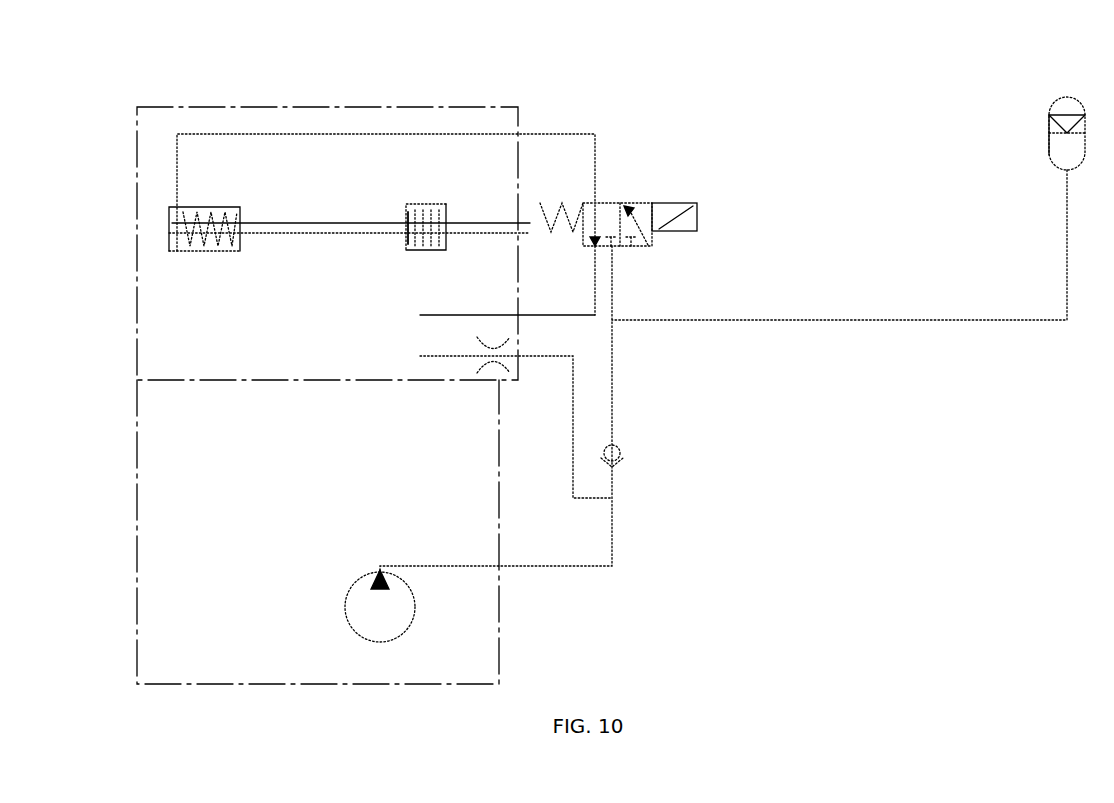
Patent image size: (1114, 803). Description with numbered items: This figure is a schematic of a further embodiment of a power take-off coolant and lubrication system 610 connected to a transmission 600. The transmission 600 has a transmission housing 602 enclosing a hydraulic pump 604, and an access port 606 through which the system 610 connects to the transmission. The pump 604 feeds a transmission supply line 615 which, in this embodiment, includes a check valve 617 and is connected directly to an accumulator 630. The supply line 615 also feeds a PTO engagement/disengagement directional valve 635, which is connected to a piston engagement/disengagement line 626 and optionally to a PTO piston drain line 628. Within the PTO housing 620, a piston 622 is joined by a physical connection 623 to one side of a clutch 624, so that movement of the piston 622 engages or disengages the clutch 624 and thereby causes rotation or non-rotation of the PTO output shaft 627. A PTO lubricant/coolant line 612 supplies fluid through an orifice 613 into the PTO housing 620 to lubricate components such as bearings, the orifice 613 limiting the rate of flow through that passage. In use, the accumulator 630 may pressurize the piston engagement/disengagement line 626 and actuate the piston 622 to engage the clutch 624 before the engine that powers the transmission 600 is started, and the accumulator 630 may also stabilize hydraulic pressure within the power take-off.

The transmission 600 is at (231, 699).
The transmission housing 602 is at (136, 518).
The hydraulic pump 604 is at (413, 620).
The access port 606 is at (501, 562).
The PTO lubrication system 610 is at (978, 429).
The PTO lubricant/coolant line 612 is at (572, 371).
The orifice 613 is at (497, 363).
The transmission supply line 615 is at (548, 568).
The check valve 617 is at (621, 452).
The PTO housing 620 is at (136, 298).
The piston 622 is at (202, 251).
The physical connection 623 is at (268, 219).
The clutch 624 is at (406, 249).
The piston engagement/disengagement line 626 is at (220, 133).
The PTO output shaft 627 is at (485, 221).
The PTO piston drain line 628 is at (433, 317).
The accumulator 630 is at (1048, 156).
The PTO engagement/disengagement directional valve 635 is at (639, 204).